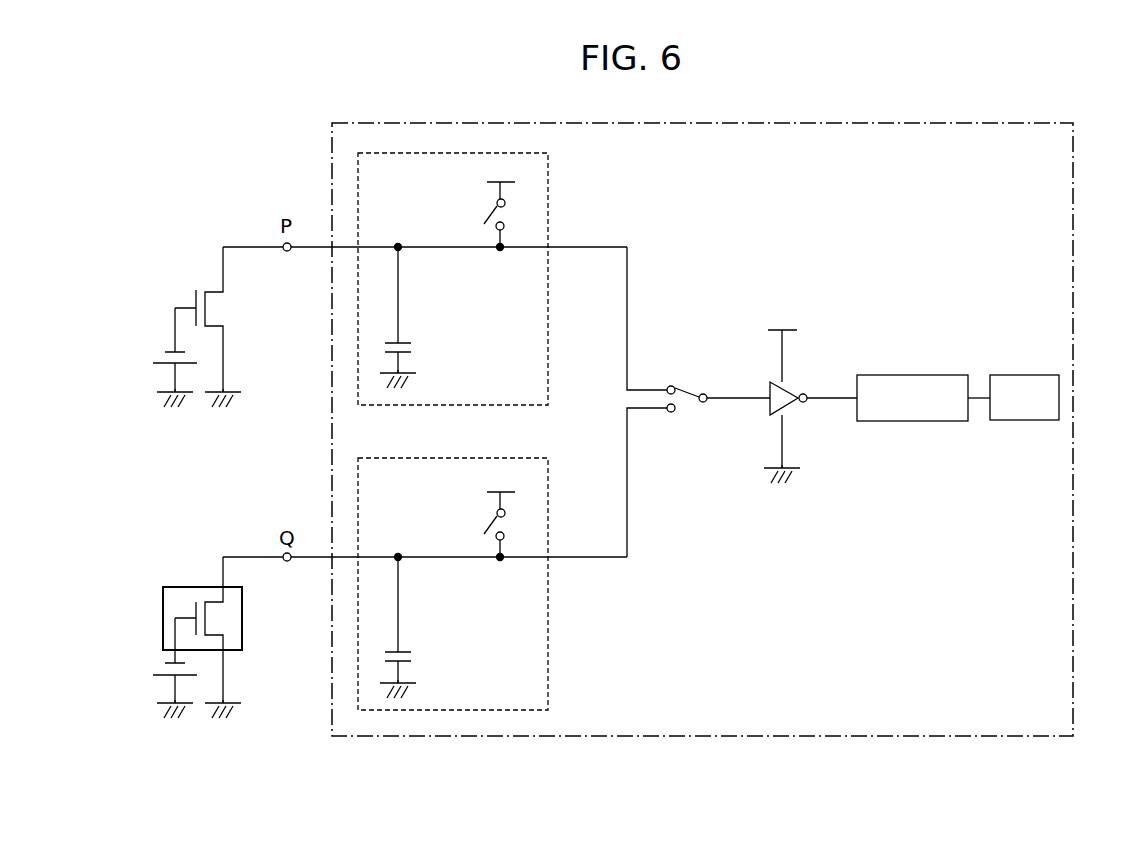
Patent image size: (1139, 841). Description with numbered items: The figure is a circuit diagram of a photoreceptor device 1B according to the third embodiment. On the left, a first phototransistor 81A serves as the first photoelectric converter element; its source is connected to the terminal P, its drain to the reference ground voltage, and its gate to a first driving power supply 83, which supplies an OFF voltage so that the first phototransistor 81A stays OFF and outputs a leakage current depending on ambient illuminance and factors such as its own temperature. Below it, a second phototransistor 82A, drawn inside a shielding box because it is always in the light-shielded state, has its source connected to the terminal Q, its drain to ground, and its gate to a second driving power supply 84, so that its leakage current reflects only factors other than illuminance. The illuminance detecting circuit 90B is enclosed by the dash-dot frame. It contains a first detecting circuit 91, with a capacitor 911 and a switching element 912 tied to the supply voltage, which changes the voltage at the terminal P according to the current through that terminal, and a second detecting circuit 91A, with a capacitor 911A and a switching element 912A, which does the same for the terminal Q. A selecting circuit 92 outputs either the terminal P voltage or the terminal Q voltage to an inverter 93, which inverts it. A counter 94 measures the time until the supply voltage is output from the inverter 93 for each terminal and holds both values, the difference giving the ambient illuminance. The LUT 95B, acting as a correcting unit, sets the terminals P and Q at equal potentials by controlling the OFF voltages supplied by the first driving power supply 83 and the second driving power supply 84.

The photoreceptor device 1B is at (1088, 182).
The first phototransistor 81A is at (268, 293).
The second phototransistor 82A is at (224, 615).
The first driving power supply 83 is at (146, 371).
The second driving power supply 84 is at (147, 695).
The illuminance detecting circuit 90B is at (708, 738).
The first detecting circuit 91 is at (467, 279).
The capacitor 911 is at (419, 344).
The switching element 912 is at (477, 214).
The second detecting circuit 91A is at (475, 584).
The capacitor 911A is at (416, 657).
The switching element 912A is at (477, 525).
The selecting circuit 92 is at (690, 413).
The inverter 93 is at (797, 429).
The counter 94 is at (927, 421).
The LUT 95B is at (1017, 420).